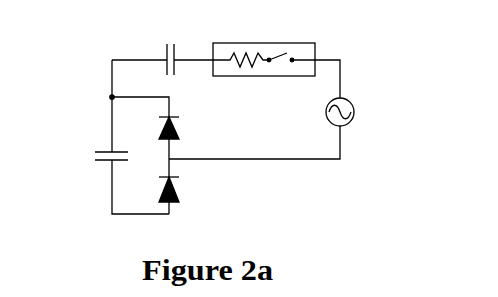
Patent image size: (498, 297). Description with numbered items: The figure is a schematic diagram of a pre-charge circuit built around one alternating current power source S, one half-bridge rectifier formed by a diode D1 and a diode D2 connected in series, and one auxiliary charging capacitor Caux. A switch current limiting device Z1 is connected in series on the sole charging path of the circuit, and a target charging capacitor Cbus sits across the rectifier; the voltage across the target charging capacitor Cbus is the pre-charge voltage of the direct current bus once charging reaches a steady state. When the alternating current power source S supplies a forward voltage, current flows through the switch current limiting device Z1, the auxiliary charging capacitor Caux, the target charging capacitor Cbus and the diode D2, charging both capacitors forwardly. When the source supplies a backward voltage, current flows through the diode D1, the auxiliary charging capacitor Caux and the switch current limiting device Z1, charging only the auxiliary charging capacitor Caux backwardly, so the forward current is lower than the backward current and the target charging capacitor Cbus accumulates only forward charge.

The auxiliary charging capacitor Caux is at (154, 56).
The switch current limiting device Z1 is at (264, 71).
The alternating current power source S is at (331, 112).
The diode D1 is at (156, 128).
The diode D2 is at (156, 190).
The target charging capacitor Cbus is at (97, 153).